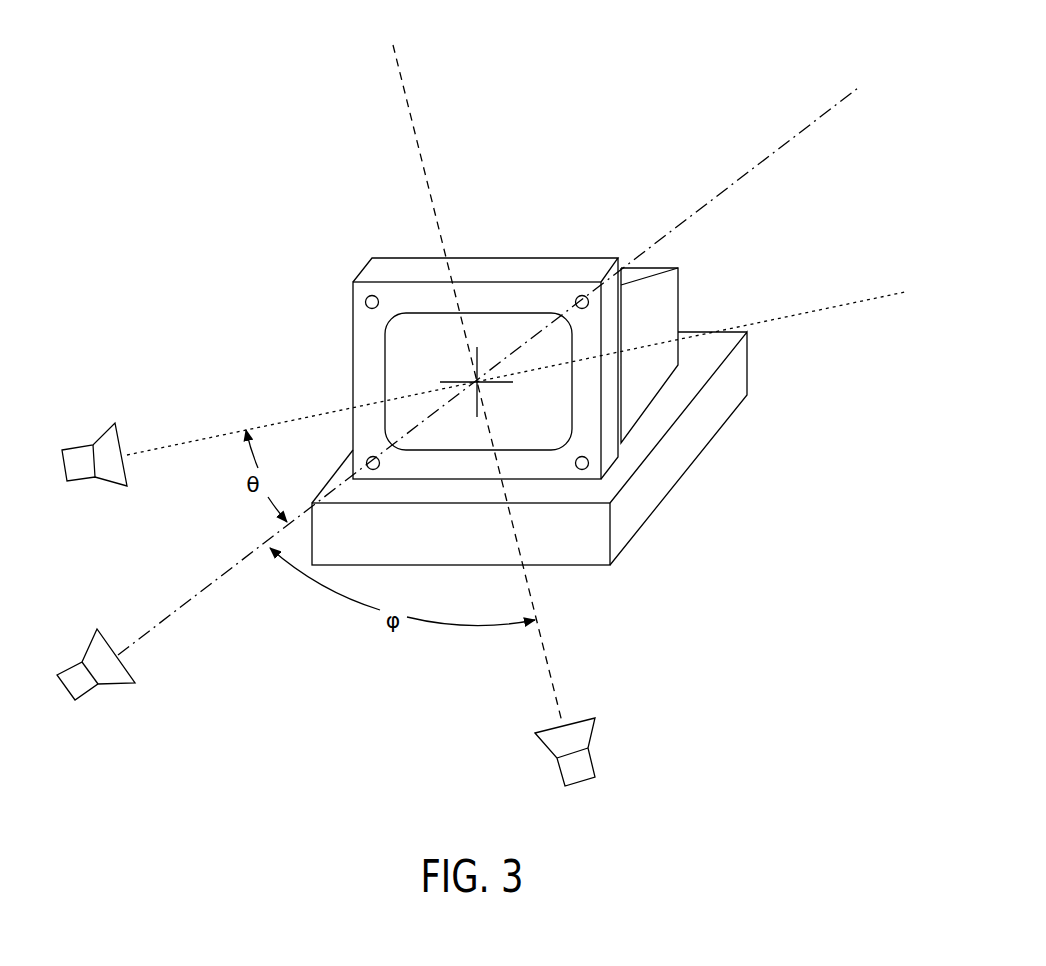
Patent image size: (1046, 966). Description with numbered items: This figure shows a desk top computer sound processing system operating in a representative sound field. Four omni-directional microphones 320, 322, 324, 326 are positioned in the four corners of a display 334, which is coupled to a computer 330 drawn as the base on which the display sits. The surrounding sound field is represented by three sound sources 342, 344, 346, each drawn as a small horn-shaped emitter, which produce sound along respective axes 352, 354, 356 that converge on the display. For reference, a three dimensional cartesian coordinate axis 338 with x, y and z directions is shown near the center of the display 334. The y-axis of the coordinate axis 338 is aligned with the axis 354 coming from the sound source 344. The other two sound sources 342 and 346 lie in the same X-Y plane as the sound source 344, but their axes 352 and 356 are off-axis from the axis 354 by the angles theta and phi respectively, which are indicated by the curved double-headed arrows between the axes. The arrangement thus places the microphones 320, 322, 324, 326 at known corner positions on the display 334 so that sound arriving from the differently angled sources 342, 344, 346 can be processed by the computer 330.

The omni-directional microphone 320 is at (371, 294).
The omni-directional microphone 322 is at (580, 294).
The omni-directional microphone 324 is at (372, 470).
The omni-directional microphone 326 is at (581, 470).
The computer 330 is at (700, 455).
The display 334 is at (610, 468).
The three dimensional cartesian coordinate axis 338 is at (481, 385).
The sound source 342 is at (99, 436).
The sound source 344 is at (90, 646).
The sound source 346 is at (595, 733).
The axis 352 is at (865, 302).
The axis 354 is at (780, 150).
The axis 356 is at (413, 122).